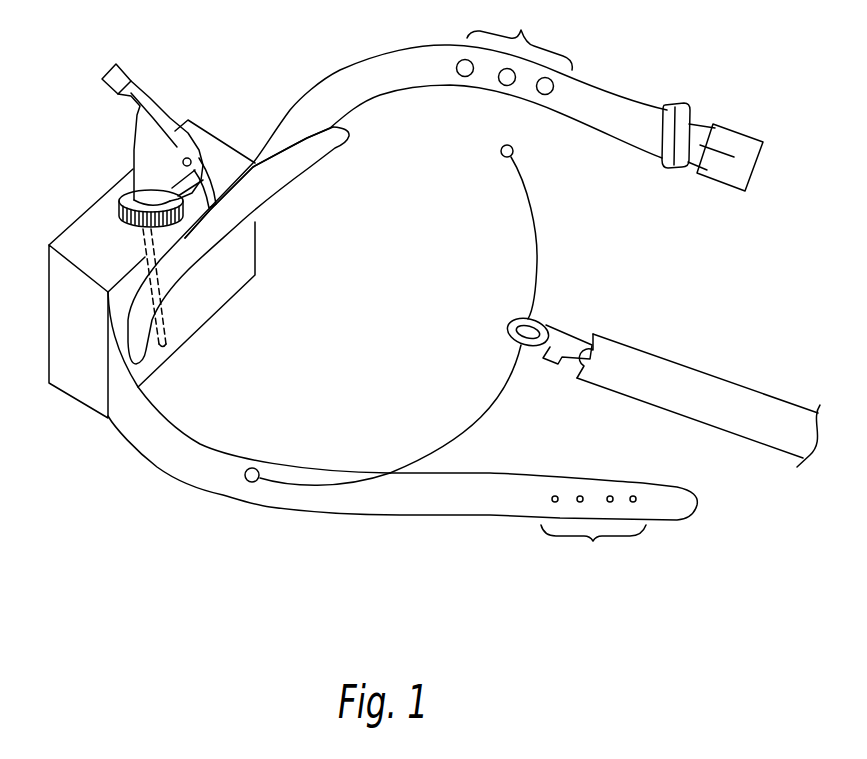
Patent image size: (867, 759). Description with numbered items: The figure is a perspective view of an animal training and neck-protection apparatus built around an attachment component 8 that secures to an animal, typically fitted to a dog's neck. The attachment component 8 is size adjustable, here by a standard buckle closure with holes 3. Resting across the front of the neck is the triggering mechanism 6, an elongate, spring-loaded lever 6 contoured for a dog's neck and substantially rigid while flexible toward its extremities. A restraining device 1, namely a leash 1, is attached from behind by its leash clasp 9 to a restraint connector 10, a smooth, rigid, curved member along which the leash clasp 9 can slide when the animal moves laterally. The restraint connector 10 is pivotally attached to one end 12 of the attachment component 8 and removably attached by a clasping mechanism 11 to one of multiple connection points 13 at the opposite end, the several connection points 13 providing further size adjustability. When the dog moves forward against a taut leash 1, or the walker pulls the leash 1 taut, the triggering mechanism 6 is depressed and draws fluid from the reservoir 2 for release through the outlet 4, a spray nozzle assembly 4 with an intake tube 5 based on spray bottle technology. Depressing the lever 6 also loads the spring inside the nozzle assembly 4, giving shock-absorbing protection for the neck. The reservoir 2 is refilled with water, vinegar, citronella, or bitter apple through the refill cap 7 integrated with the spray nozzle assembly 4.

The restraining device 1 is at (750, 402).
The reservoir 2 is at (62, 342).
The holes 3 is at (593, 529).
The spray nozzle assembly 4 is at (143, 91).
The intake tube 5 is at (162, 336).
The triggering mechanism 6 is at (273, 204).
The refill cap 7 is at (120, 203).
The attachment component 8 is at (418, 498).
The leash clasp 9 is at (532, 323).
The restraint connector 10 is at (535, 208).
The clasping mechanism 11 is at (500, 154).
The end 12 is at (250, 482).
The connection points 13 is at (515, 52).